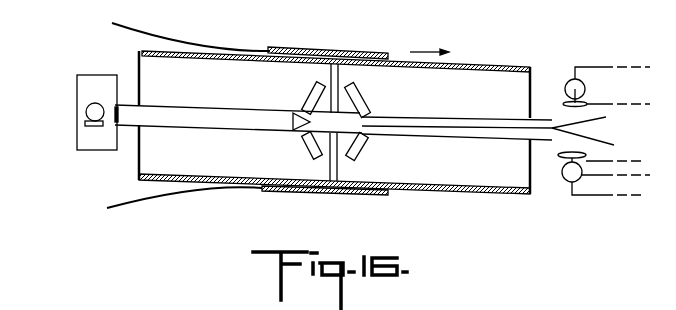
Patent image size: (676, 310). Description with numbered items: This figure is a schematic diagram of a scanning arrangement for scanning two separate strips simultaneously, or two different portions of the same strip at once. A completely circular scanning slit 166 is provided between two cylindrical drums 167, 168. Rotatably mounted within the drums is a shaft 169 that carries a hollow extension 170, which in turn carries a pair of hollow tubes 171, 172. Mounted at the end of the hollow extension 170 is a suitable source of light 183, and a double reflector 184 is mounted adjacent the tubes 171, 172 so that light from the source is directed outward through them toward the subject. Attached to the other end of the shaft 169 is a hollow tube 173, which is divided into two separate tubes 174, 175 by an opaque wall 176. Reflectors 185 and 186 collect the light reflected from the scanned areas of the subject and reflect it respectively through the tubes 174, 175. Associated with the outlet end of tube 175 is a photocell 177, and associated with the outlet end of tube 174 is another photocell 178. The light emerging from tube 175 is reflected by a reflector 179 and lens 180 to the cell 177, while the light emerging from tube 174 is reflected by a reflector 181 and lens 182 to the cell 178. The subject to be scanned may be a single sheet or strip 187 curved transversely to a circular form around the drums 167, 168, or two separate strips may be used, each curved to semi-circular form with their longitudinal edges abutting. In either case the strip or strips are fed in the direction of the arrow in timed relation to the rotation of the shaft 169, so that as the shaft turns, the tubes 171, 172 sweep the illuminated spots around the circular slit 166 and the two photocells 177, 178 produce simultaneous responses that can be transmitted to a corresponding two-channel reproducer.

The scanning slit 166 is at (337, 168).
The cylindrical drum 167 is at (138, 173).
The cylindrical drum 168 is at (451, 192).
The shaft 169 is at (345, 118).
The hollow extension 170 is at (212, 126).
The hollow tube 171 is at (305, 100).
The hollow tube 172 is at (307, 153).
The hollow tube 173 is at (431, 137).
The tube 174 is at (473, 119).
The tube 175 is at (390, 130).
The opaque wall 176 is at (497, 127).
The photocell 177 is at (582, 175).
The photocell 178 is at (585, 88).
The reflector 179 is at (600, 142).
The lens 180 is at (560, 158).
The reflector 181 is at (597, 117).
The lens 182 is at (565, 102).
The source of light 183 is at (87, 112).
The double reflector 184 is at (293, 115).
The reflector 185 is at (363, 118).
The reflector 186 is at (365, 126).
The strip 187 is at (157, 33).